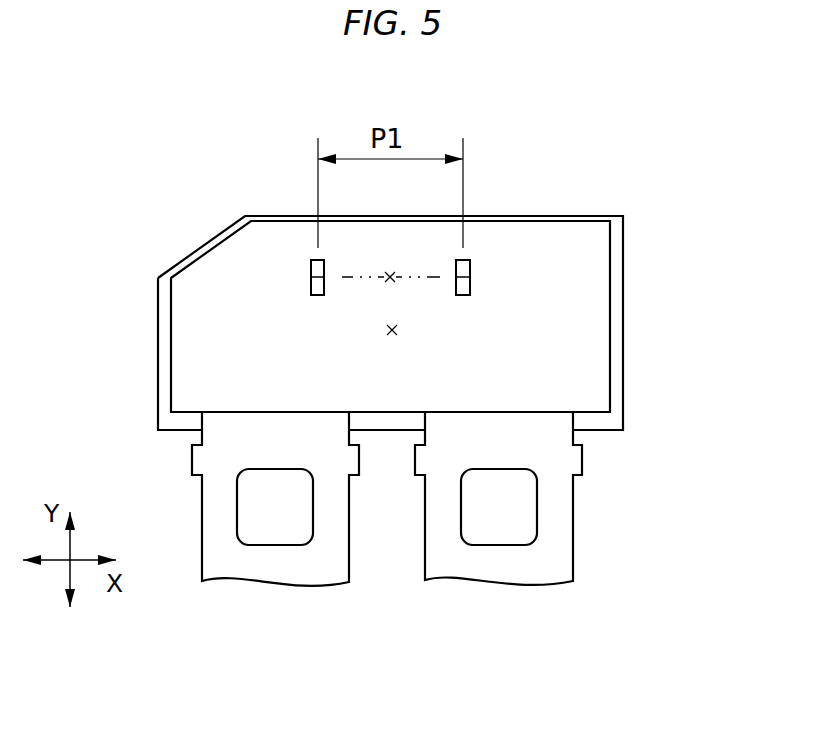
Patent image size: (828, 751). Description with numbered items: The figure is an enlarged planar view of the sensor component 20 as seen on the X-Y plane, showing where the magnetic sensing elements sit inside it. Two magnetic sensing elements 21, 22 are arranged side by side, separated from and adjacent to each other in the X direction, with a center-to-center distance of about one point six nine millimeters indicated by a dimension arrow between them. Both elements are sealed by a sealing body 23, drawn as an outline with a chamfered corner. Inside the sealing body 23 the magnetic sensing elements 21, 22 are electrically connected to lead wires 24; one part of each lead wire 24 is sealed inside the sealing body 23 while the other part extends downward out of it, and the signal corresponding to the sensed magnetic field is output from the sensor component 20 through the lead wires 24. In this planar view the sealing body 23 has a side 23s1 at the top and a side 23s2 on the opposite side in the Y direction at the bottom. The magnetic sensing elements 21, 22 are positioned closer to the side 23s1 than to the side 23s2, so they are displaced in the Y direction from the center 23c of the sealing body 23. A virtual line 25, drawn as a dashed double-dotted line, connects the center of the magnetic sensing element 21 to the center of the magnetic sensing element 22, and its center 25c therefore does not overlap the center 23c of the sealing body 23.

The sensor component 20 is at (649, 192).
The magnetic sensing element 21 is at (311, 284).
The magnetic sensing element 22 is at (470, 283).
The sealing body 23 is at (184, 335).
The side of sealing body 23s1 is at (284, 205).
The side of sealing body 23s2 is at (592, 442).
The center of sealing body 23c is at (396, 332).
The lead wire 24 is at (307, 577).
The line 25 is at (435, 279).
The center of line 25c is at (386, 278).